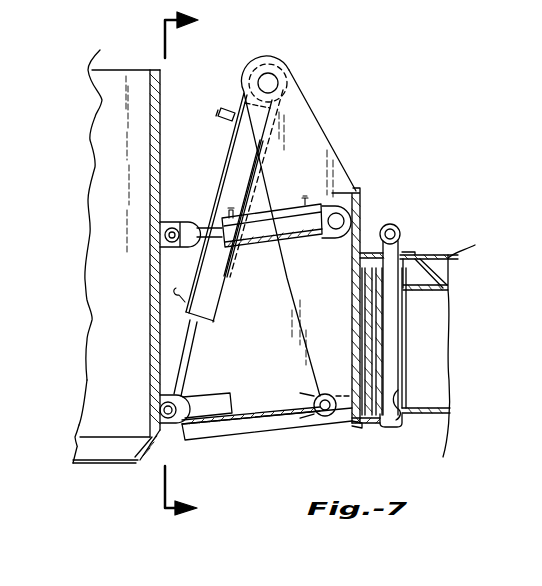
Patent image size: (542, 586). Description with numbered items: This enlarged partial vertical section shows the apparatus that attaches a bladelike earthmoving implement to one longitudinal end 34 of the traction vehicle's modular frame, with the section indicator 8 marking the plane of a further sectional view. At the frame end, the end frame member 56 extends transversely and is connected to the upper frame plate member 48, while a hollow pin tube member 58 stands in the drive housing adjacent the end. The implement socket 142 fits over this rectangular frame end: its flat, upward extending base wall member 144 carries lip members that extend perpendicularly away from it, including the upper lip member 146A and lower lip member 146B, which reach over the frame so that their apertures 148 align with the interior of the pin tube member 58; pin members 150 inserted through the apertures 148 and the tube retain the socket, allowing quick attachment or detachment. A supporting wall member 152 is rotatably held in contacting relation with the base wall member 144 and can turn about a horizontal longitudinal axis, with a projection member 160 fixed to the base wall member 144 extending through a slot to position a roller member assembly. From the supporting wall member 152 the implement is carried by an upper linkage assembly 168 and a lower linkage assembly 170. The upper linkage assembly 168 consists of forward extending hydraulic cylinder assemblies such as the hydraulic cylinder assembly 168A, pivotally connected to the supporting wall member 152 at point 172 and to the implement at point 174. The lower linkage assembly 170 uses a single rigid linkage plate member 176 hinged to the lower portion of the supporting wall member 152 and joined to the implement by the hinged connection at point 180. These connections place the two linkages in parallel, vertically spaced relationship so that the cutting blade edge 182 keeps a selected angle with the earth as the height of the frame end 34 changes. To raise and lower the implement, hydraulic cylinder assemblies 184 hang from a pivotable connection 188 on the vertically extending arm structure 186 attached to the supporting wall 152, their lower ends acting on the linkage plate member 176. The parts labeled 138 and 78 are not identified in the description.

The section line 8- 8 is at (190, 267).
The longitudinal end 34 is at (430, 250).
The upper frame plate member 48 is at (43, 354).
The end frame member 56 is at (368, 346).
The pin tube member 58 is at (412, 358).
The pivot pin 78 is at (306, 401).
The wall 138 is at (128, 204).
The implement socket 142 is at (363, 424).
The base wall member 144 is at (362, 314).
The upper lip member 146A is at (368, 250).
The lower lip member 146B is at (374, 424).
The apertures 148 is at (388, 430).
The pin members 150 is at (413, 208).
The supporting wall member 152 is at (352, 291).
The projection member 160 is at (402, 420).
The upper linkage assembly 168 is at (276, 249).
The hydraulic cylinder assembly 168A is at (242, 150).
The lower linkage assembly 170 is at (245, 444).
The pivotal connection point 172 is at (345, 210).
The pivotal connection point 174 is at (196, 226).
The linkage plate member 176 is at (280, 418).
The hinged connection point 180 is at (178, 404).
The cutting blade edge 182 is at (136, 442).
The hydraulic cylinder assemblies 184 is at (216, 130).
The arm structure 186 is at (290, 93).
The pivotable connection 188 is at (271, 80).